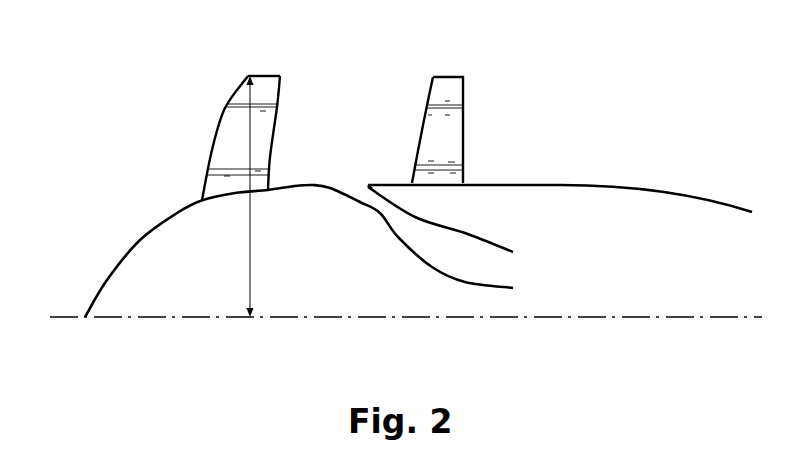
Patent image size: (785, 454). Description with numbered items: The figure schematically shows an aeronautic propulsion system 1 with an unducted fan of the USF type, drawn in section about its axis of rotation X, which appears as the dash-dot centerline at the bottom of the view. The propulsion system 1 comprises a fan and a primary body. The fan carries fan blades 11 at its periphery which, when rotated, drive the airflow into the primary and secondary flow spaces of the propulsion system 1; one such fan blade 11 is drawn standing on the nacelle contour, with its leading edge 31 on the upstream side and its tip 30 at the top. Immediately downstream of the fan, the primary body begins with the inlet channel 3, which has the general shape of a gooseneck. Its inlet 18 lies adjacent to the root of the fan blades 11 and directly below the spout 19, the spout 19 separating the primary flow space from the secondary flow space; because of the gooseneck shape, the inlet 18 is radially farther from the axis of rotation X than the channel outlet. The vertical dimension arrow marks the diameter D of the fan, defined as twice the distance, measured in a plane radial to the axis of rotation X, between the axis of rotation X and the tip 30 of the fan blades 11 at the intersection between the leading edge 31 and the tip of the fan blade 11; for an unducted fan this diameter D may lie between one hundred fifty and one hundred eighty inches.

The propulsion system 1 is at (89, 160).
The inlet channel 3 is at (440, 224).
The fan blades 11 is at (222, 111).
The inlet 18 is at (351, 178).
The spout 19 is at (399, 193).
The tip 30 is at (264, 75).
The leading edge 31 is at (221, 102).
The diameter D is at (250, 196).
The axis of rotation X is at (57, 322).